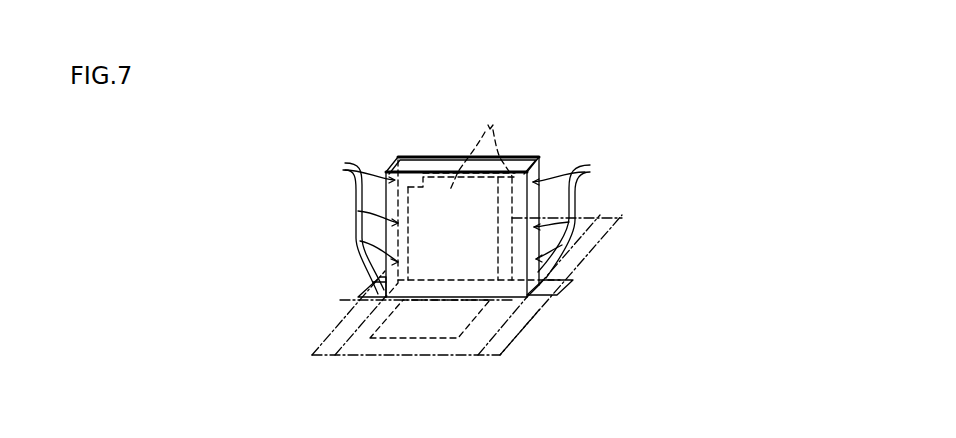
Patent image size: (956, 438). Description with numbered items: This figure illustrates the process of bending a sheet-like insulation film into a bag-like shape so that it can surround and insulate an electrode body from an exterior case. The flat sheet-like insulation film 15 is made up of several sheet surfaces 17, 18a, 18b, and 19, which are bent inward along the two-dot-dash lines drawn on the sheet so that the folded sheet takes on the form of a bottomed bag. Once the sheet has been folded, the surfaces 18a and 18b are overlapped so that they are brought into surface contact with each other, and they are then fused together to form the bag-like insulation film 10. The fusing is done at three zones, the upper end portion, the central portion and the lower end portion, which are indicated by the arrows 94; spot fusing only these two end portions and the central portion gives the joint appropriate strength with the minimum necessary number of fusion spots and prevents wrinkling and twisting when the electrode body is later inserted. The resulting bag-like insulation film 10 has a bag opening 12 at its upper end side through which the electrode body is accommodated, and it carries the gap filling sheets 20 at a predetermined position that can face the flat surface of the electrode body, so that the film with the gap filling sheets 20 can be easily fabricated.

The insulation film 10 is at (394, 158).
The bag opening 12 is at (438, 165).
The sheet-like insulation film 15 is at (612, 219).
The sheet surface 17 is at (580, 214).
The surface 18a is at (590, 245).
The surface 18b is at (380, 274).
The sheet surface 19 is at (362, 296).
The gap filling sheet 20 is at (479, 193).
The arrows 94 is at (464, 223).